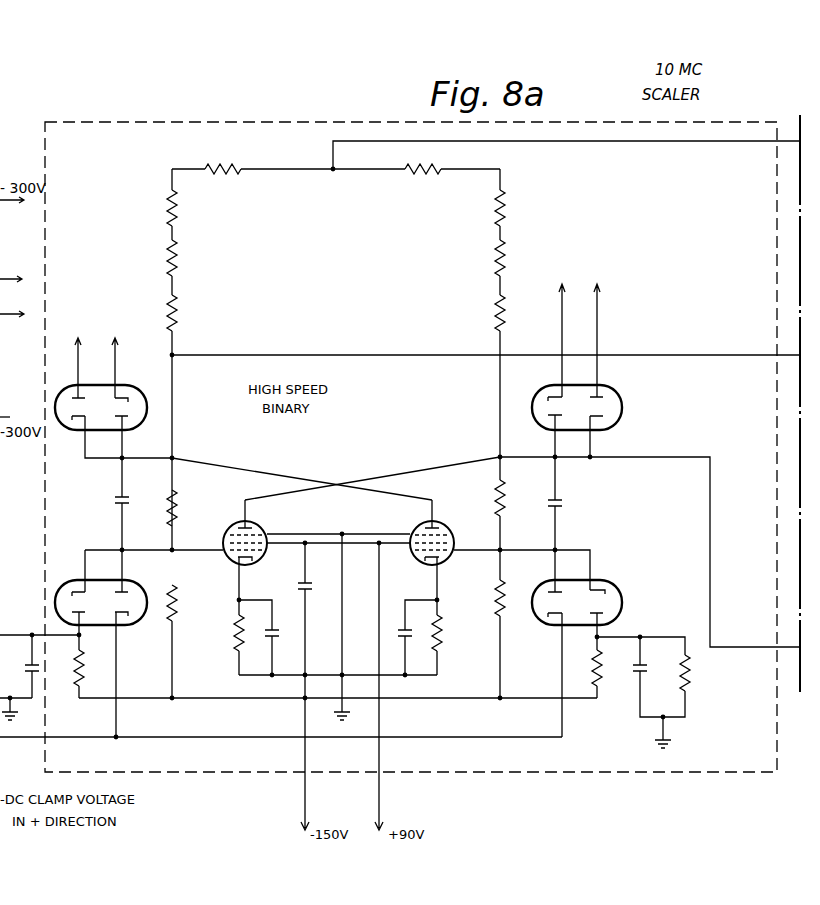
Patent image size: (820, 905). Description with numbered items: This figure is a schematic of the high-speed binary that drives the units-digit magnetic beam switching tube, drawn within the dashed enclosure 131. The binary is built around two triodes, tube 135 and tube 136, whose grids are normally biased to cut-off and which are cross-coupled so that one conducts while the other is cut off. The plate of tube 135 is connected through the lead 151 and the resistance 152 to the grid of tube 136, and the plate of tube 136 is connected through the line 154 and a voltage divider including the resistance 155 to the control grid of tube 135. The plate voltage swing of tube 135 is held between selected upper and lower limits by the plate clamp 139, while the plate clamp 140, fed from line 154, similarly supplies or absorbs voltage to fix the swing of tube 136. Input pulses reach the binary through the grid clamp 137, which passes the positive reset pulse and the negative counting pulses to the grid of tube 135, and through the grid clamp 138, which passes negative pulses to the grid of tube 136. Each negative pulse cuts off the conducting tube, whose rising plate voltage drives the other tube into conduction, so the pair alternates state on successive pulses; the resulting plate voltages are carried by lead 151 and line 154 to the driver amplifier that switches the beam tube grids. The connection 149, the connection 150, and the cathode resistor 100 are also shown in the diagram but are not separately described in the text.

The high speed binary circuit (dashed enclosure) 131 is at (160, 122).
The plate clamp 140 is at (147, 408).
The plate clamp 139 is at (615, 395).
The grid clamp 137 is at (128, 622).
The grid clamp 138 is at (622, 598).
The tube 135 is at (262, 527).
The tube 136 is at (450, 530).
The line 154 is at (676, 355).
The lead 151 is at (673, 457).
The resistance 155 is at (178, 505).
The resistance 152 is at (495, 490).
The clamp connection conductor 149 is at (125, 548).
The clamp connection conductor 150 is at (590, 548).
The cathode resistor 100 is at (445, 638).